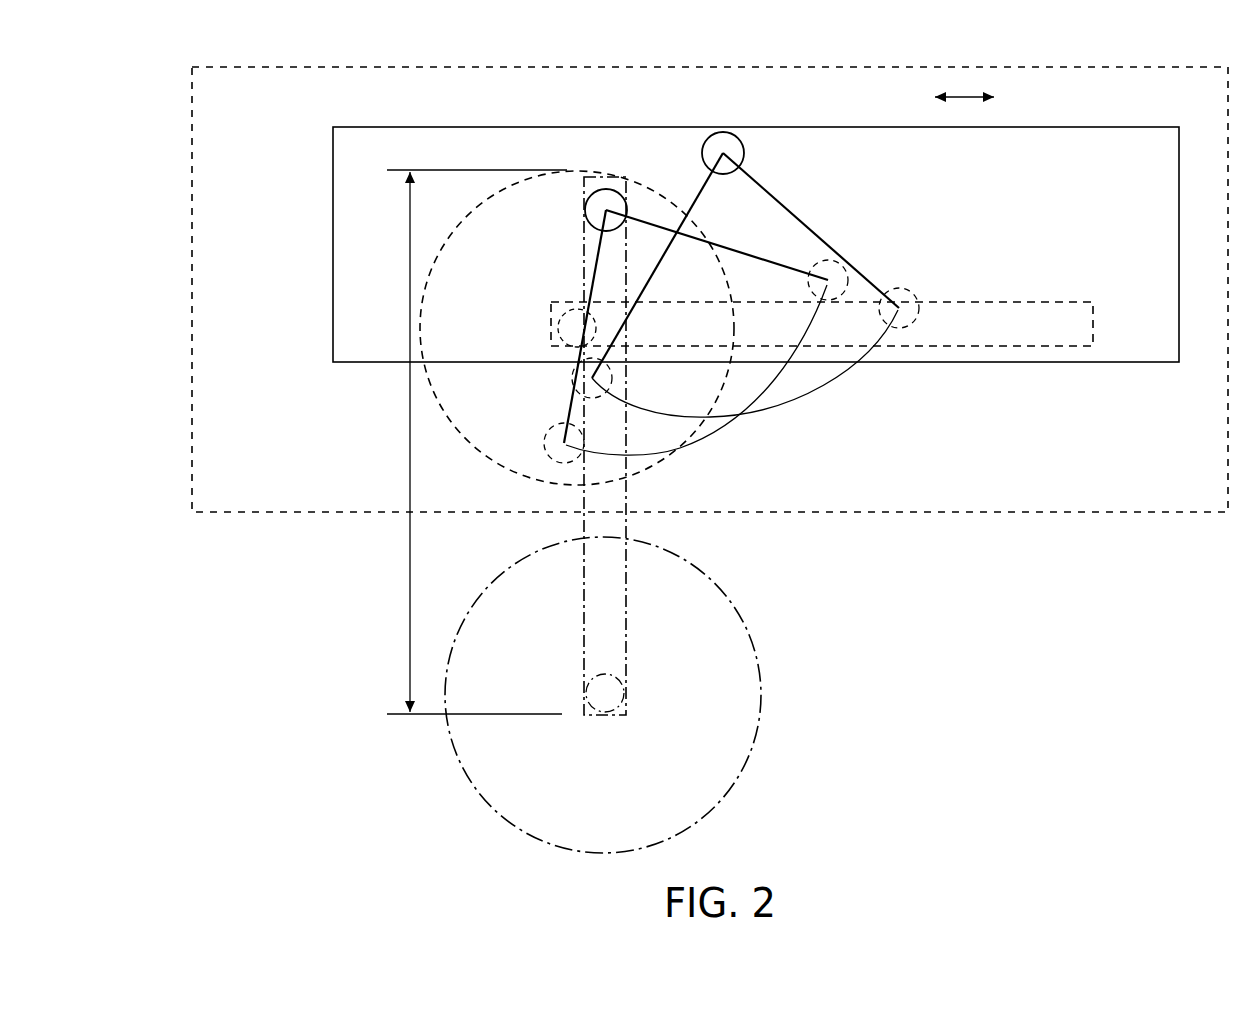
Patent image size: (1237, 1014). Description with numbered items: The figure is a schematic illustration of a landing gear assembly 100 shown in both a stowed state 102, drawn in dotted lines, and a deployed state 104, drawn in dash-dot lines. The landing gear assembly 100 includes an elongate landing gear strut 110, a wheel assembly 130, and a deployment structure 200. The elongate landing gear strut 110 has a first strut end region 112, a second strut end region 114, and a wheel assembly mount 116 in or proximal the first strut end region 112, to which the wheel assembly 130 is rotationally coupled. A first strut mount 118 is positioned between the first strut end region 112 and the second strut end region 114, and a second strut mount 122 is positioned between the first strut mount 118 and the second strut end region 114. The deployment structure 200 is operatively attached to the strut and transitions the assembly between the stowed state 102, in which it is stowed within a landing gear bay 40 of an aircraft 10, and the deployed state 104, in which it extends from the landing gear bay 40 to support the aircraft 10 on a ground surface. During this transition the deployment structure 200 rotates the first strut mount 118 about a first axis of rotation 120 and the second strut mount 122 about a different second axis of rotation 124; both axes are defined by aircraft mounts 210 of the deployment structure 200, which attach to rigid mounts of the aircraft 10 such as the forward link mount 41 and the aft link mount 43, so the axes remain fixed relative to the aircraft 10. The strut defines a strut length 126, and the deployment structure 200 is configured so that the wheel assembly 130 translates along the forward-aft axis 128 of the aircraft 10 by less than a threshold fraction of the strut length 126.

The aircraft 10 is at (166, 166).
The landing gear bay 40 is at (189, 305).
The forward link mount 41 is at (614, 205).
The aft link mount 43 is at (730, 150).
The landing gear assembly 100 is at (903, 562).
The stowed state 102 is at (913, 383).
The deployed state 104 is at (365, 668).
The elongate landing gear strut 110 is at (957, 300).
The first strut end region 112 is at (556, 323).
The second strut end region 114 is at (615, 174).
The wheel assembly mount 116 is at (569, 308).
The first strut mount 118 is at (816, 265).
The first axis of rotation 120 is at (610, 207).
The second strut mount 122 is at (899, 287).
The second axis of rotation 124 is at (726, 148).
The strut length 126 is at (407, 285).
The forward-aft axis 128 is at (963, 96).
The wheel assembly 130 is at (437, 405).
The deployment structure 200 is at (327, 341).
The aircraft mount 210 is at (589, 198).